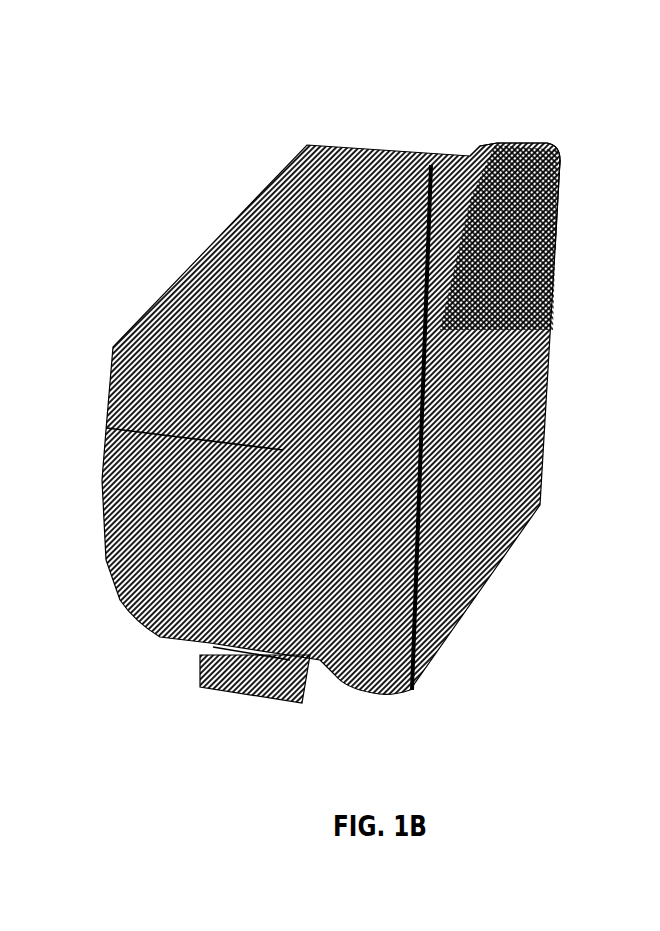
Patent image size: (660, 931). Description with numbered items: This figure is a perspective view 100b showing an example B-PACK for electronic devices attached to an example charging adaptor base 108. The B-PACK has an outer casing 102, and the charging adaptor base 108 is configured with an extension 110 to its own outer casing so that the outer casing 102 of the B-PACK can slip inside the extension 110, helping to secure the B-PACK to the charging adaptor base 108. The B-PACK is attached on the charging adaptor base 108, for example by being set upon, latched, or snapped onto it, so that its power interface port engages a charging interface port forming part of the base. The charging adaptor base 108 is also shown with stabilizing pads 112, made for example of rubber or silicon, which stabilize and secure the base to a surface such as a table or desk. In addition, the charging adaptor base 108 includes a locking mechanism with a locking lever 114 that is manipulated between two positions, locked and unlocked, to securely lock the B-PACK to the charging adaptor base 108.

The perspective view 100b is at (543, 768).
The outer casing 102 is at (127, 458).
The charging adaptor base 108 is at (507, 160).
The extension 110 is at (437, 160).
The stabilizing pads 112 is at (557, 200).
The locking lever 114 is at (247, 677).